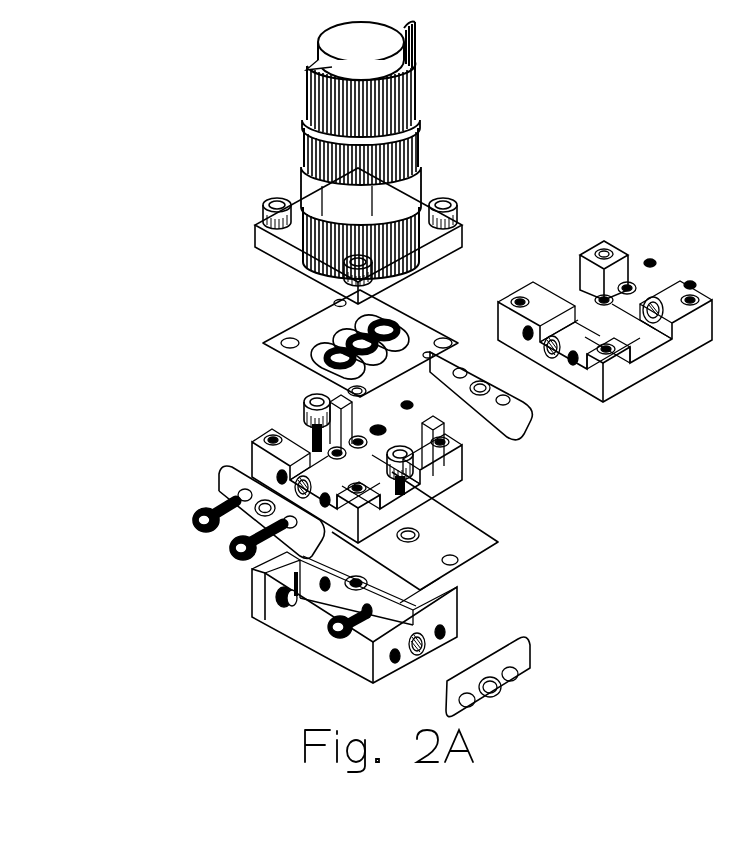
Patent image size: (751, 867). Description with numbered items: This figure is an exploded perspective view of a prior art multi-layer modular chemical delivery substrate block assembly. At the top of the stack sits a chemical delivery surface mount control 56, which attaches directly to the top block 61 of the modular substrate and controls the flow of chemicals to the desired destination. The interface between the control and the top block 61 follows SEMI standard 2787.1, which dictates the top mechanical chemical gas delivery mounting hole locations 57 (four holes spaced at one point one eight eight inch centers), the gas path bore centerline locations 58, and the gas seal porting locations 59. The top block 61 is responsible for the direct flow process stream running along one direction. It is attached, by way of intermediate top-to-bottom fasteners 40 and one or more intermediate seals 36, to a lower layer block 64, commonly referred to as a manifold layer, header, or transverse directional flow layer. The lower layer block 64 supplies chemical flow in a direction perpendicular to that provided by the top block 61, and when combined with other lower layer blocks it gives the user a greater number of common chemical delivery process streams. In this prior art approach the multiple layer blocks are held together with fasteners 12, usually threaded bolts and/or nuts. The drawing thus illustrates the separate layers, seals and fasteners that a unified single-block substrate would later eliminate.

The fasteners 12 is at (415, 480).
The intermediate seals 36 is at (447, 544).
The intermediate fasteners 40 is at (300, 437).
The chemical delivery surface mount controls 56 is at (430, 66).
The top mechanical chemical gas delivery mounting hole locations 57 is at (590, 252).
The gas path bore centerline locations 58 is at (588, 292).
The gas seal porting locations 59 is at (627, 318).
The top block 61 is at (240, 457).
The lower layer block 64 is at (245, 622).